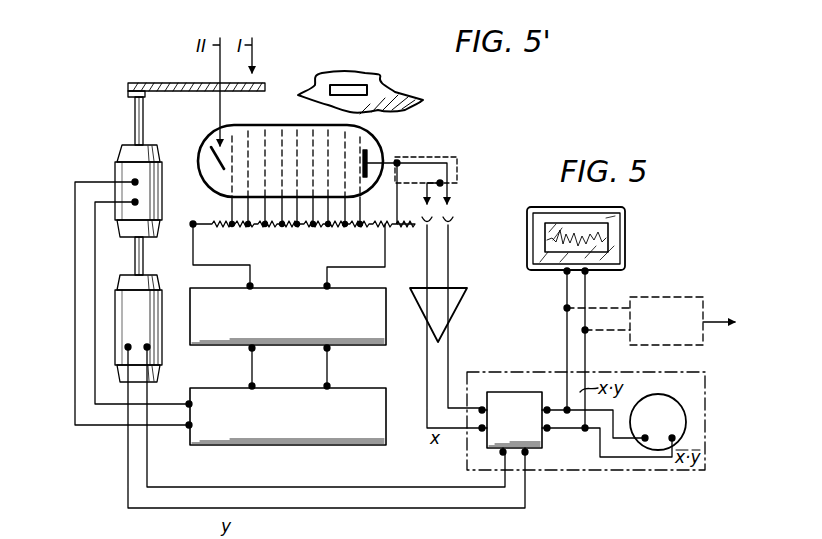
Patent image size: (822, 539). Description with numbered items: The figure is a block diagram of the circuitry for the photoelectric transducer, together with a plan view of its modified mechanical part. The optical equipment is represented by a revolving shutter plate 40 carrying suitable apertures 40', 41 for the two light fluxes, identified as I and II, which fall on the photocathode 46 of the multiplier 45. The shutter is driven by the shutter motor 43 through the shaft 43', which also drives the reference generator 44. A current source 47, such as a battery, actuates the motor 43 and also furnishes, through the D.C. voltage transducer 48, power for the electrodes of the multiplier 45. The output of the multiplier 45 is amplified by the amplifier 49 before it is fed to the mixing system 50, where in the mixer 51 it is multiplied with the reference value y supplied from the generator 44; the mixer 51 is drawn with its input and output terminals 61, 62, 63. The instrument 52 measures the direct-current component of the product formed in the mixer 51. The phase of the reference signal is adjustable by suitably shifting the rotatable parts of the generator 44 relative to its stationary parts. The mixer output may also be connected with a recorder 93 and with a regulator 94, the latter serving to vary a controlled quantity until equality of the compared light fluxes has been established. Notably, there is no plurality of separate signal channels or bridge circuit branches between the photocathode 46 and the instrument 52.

In FIG. 5', the revolving shutter plate 40 is at (360, 78).
In FIG. 5, the revolving shutter plate 40 is at (196, 84).
In FIG. 5', the aperture 40' is at (348, 65).
In FIG. 5', the aperture 41 is at (405, 95).
In FIG. 5, the shutter motor 43 is at (123, 191).
In FIG. 5, the shaft 43' is at (140, 183).
In FIG. 5, the reference generator 44 is at (162, 346).
In FIG. 5, the multiplier 45 is at (291, 133).
In FIG. 5, the photocathode 46 is at (207, 187).
In FIG. 5, the current source 47 is at (282, 437).
In FIG. 5, the D.C. voltage transducer 48 is at (287, 297).
In FIG. 5, the amplifier 49 is at (462, 293).
In FIG. 5, the mixing system 50 is at (603, 475).
In FIG. 5, the mixer 51 is at (508, 392).
In FIG. 5, the instrument 52 is at (677, 412).
In FIG. 5, the y input of multiplier 61 is at (515, 456).
In FIG. 5, the x input of multiplier 62 is at (480, 430).
In FIG. 5, the output of multiplier 63 is at (556, 424).
In FIG. 5, the recorder 93 is at (617, 225).
In FIG. 5, the regulator 94 is at (672, 303).